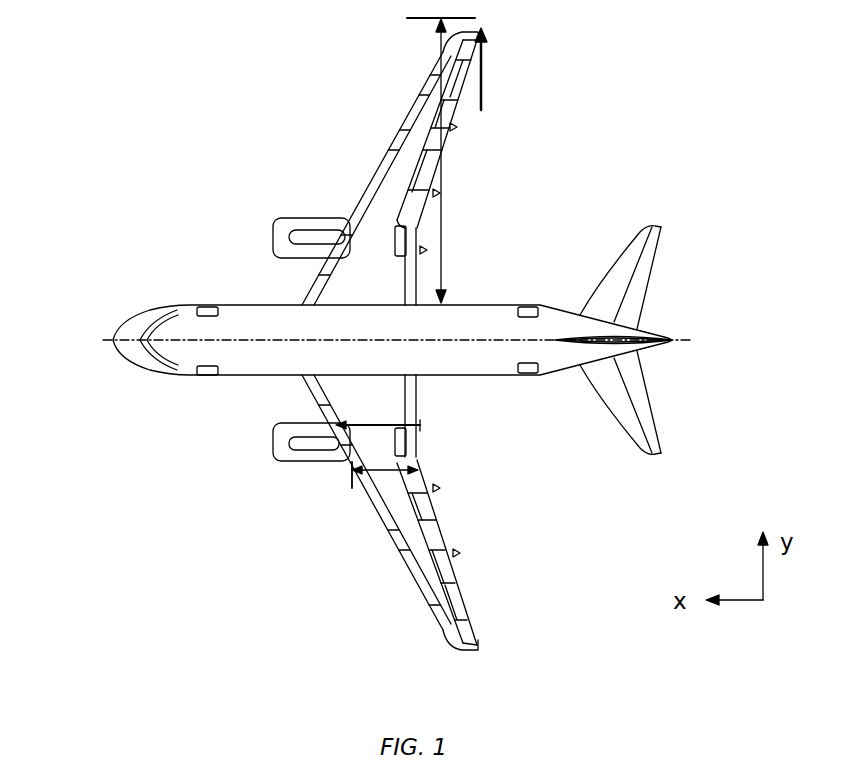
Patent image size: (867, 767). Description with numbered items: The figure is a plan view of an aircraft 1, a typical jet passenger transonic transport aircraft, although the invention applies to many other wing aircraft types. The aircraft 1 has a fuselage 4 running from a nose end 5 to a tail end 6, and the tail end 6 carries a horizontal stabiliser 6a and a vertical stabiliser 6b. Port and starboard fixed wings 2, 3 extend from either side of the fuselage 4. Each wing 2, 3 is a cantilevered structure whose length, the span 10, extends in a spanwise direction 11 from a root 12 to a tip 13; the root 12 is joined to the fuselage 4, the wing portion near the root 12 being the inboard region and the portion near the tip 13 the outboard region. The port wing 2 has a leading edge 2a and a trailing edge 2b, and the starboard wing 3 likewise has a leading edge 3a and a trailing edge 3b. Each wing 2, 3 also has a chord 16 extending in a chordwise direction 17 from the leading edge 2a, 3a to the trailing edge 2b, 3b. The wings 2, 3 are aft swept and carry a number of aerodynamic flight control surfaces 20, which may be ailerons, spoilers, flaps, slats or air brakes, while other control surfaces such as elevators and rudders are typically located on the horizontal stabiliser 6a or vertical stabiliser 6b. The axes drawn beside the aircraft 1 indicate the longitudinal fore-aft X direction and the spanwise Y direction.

The aircraft 1 is at (133, 407).
The port fixed wing 2 is at (336, 270).
The leading edge of port wing 2a is at (390, 143).
The trailing edge of port wing 2b is at (433, 173).
The starboard fixed wing 3 is at (450, 602).
The leading edge of starboard wing 3a is at (405, 563).
The trailing edge of starboard wing 3b is at (445, 537).
The fuselage 4 is at (481, 307).
The nose end 5 is at (103, 313).
The tail end 6 is at (592, 442).
The horizontal stabiliser 6a is at (635, 243).
The vertical stabiliser 6b is at (637, 355).
The span 10 is at (440, 102).
The spanwise direction 11 is at (484, 88).
The root 12 is at (393, 383).
The tip 13 is at (477, 643).
The chord 16 is at (352, 472).
The chordwise direction 17 is at (343, 447).
The aerodynamic flight control surfaces 20 is at (350, 213).